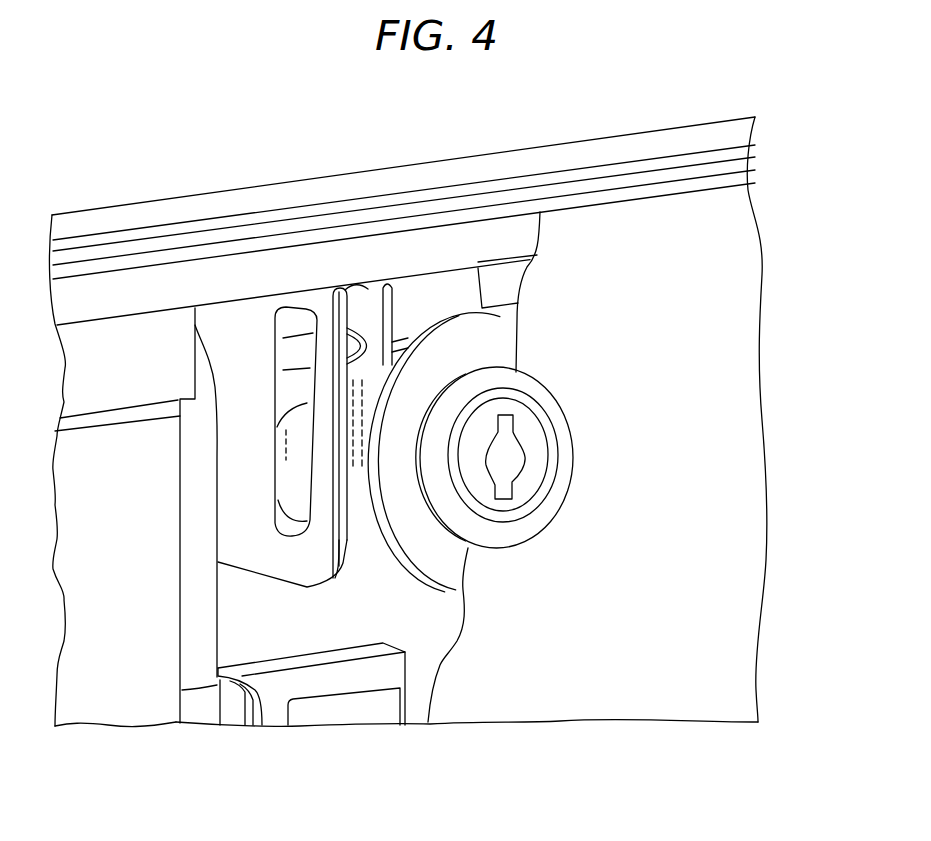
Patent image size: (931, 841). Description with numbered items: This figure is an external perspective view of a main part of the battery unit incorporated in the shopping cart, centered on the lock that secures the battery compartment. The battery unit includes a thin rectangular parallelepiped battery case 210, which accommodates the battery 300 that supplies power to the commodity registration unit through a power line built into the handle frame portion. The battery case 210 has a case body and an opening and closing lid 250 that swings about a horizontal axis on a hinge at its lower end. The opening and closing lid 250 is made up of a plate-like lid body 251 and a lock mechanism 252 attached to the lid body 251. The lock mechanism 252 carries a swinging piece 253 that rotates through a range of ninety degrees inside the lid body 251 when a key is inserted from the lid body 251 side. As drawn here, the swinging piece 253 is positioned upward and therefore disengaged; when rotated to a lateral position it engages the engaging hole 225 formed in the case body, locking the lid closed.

The battery case 210 is at (683, 128).
The engaging hole 225 is at (304, 306).
The opening and closing lid 250 is at (727, 479).
The lid body 251 is at (568, 687).
The lock mechanism 252 is at (493, 383).
The swinging piece 253 is at (360, 383).
The battery 300 is at (103, 685).